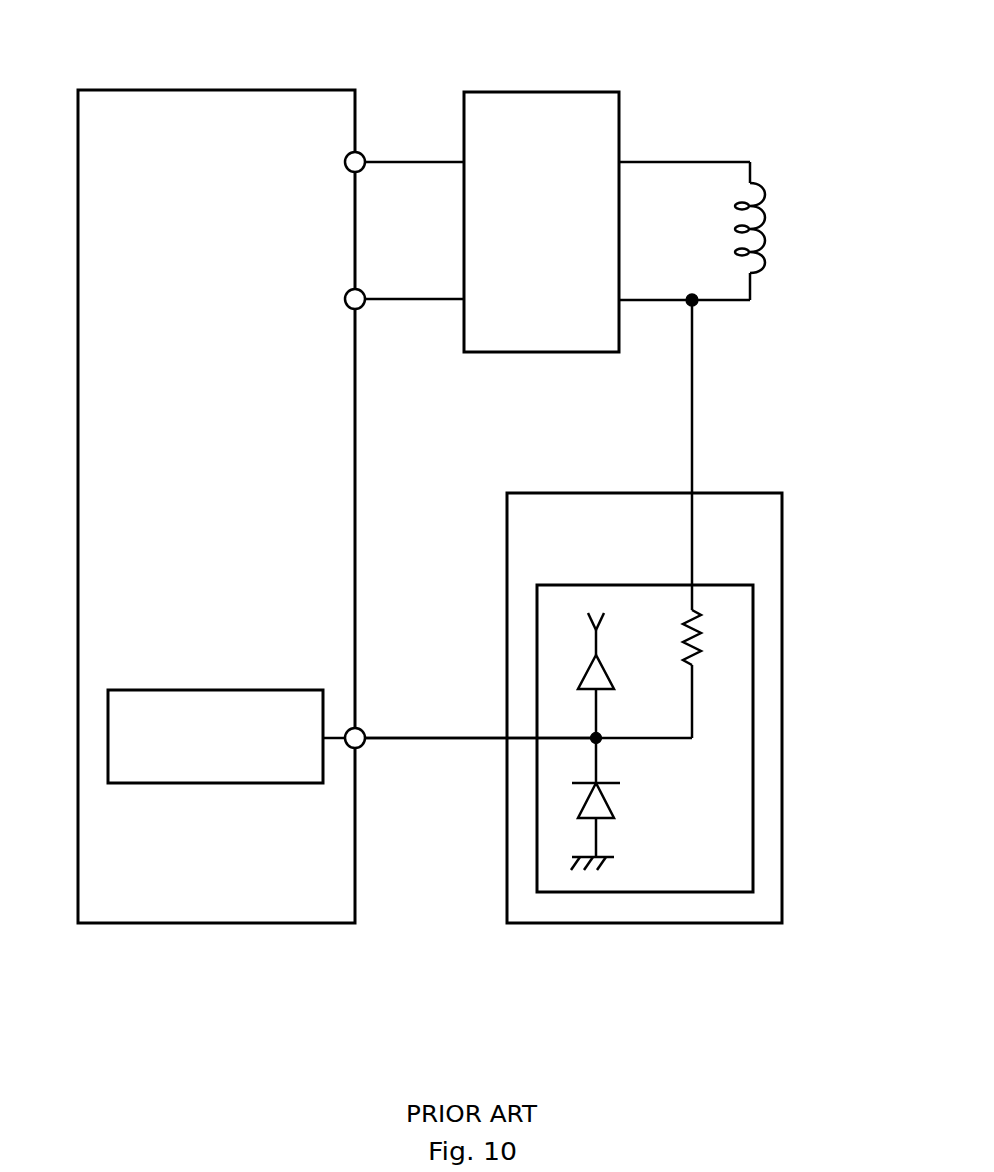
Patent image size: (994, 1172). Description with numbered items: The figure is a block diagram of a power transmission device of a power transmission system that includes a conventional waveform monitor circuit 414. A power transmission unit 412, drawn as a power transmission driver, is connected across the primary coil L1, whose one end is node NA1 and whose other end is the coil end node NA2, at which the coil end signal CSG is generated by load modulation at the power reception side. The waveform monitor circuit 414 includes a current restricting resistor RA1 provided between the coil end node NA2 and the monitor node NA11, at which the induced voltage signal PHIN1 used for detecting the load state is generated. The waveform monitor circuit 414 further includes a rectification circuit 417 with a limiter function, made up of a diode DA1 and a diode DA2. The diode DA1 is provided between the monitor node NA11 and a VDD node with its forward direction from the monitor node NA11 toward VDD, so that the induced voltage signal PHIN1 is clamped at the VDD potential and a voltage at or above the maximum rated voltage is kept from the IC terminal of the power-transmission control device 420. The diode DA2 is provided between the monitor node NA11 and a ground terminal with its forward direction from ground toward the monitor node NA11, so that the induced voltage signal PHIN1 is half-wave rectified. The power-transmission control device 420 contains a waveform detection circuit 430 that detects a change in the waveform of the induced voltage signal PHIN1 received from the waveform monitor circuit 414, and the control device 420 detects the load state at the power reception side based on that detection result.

The power-transmission control device 420 is at (265, 90).
The power transmission unit (power transmission driver) 412 is at (577, 92).
The waveform monitor circuit 414 is at (650, 493).
The rectification circuit 417 is at (782, 830).
The waveform detection circuit 430 is at (238, 690).
The primary coil L1 is at (767, 231).
The node NA1 is at (684, 146).
The coil end node NA2 is at (684, 288).
The coil end signal CSG is at (731, 455).
The current restricting resistor RA1 is at (716, 674).
The diode DA1 is at (620, 675).
The diode DA2 is at (615, 804).
The induced voltage signal PHIN1 is at (528, 730).
The monitor node NA11 is at (480, 751).